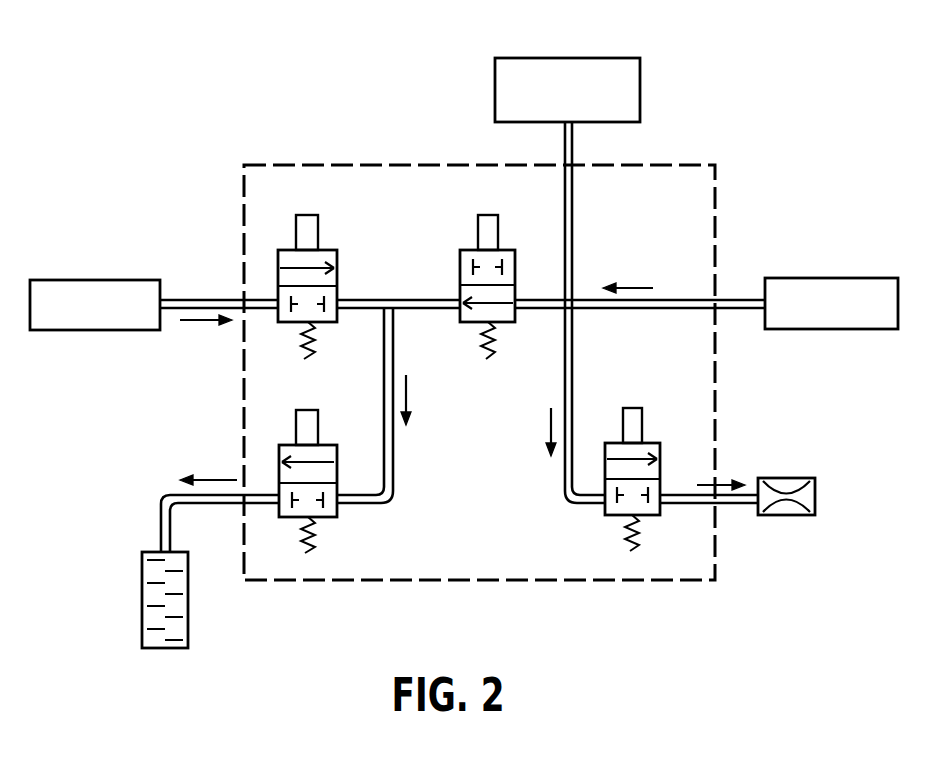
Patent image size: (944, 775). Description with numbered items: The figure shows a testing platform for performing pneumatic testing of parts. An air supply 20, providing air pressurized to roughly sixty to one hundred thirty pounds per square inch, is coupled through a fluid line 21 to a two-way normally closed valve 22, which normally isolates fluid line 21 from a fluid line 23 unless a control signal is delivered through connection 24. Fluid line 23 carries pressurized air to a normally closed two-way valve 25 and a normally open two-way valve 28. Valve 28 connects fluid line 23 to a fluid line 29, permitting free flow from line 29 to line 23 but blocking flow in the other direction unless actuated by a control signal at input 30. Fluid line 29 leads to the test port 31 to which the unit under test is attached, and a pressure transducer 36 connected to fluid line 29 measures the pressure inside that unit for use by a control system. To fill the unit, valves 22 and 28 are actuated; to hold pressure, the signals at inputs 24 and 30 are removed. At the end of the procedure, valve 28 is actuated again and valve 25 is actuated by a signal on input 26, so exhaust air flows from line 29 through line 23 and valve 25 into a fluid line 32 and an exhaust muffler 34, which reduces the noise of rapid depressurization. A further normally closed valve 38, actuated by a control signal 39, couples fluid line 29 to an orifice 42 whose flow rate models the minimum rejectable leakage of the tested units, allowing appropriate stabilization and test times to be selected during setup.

The air supply 20 is at (95, 280).
The fluid line 21 is at (212, 298).
The two-way normally closed valve 22 is at (330, 250).
The fluid line 23 is at (416, 310).
The connection 24 is at (307, 359).
The normally closed two-way valve 25 is at (320, 445).
The input 26 is at (308, 553).
The normally open two-way valve 28 is at (500, 250).
The fluid line 29 is at (620, 310).
The input 30 is at (487, 359).
The test port 31 is at (830, 278).
The fluid line 32 is at (213, 503).
The exhaust muffler 34 is at (188, 622).
The pressure transducer 36 is at (557, 57).
The normally closed valve 38 is at (650, 443).
The control signal 39 is at (631, 551).
The orifice 42 is at (785, 478).